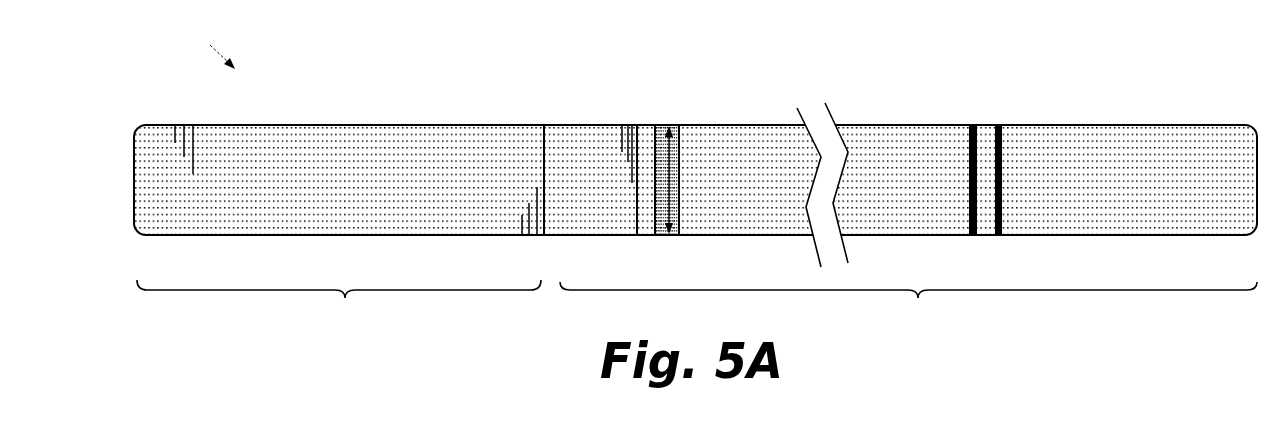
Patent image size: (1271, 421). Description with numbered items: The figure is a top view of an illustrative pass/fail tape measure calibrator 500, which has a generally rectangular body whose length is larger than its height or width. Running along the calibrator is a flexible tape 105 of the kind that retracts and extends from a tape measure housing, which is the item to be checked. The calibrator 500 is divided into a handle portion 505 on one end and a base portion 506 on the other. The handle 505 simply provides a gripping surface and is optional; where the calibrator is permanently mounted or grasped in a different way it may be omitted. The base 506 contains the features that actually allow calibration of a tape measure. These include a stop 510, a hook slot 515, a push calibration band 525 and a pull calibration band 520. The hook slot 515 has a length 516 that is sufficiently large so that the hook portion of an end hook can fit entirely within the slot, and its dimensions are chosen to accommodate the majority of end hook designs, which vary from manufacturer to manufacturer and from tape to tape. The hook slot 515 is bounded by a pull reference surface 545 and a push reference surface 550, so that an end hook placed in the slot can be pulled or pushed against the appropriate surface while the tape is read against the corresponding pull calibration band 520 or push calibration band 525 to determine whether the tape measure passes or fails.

The flexible tape 105 is at (1178, 132).
The pass/fail tape measure calibrator 500 is at (207, 47).
The handle portion 505 is at (339, 307).
The base portion 506 is at (908, 304).
The stop 510 is at (588, 138).
The hook slot 515 is at (663, 124).
The length of the hook slot 516 is at (681, 171).
The pull calibration band 520 is at (998, 124).
The push calibration band 525 is at (973, 124).
The pull reference surface 545 is at (683, 236).
The push reference surface 550 is at (647, 236).